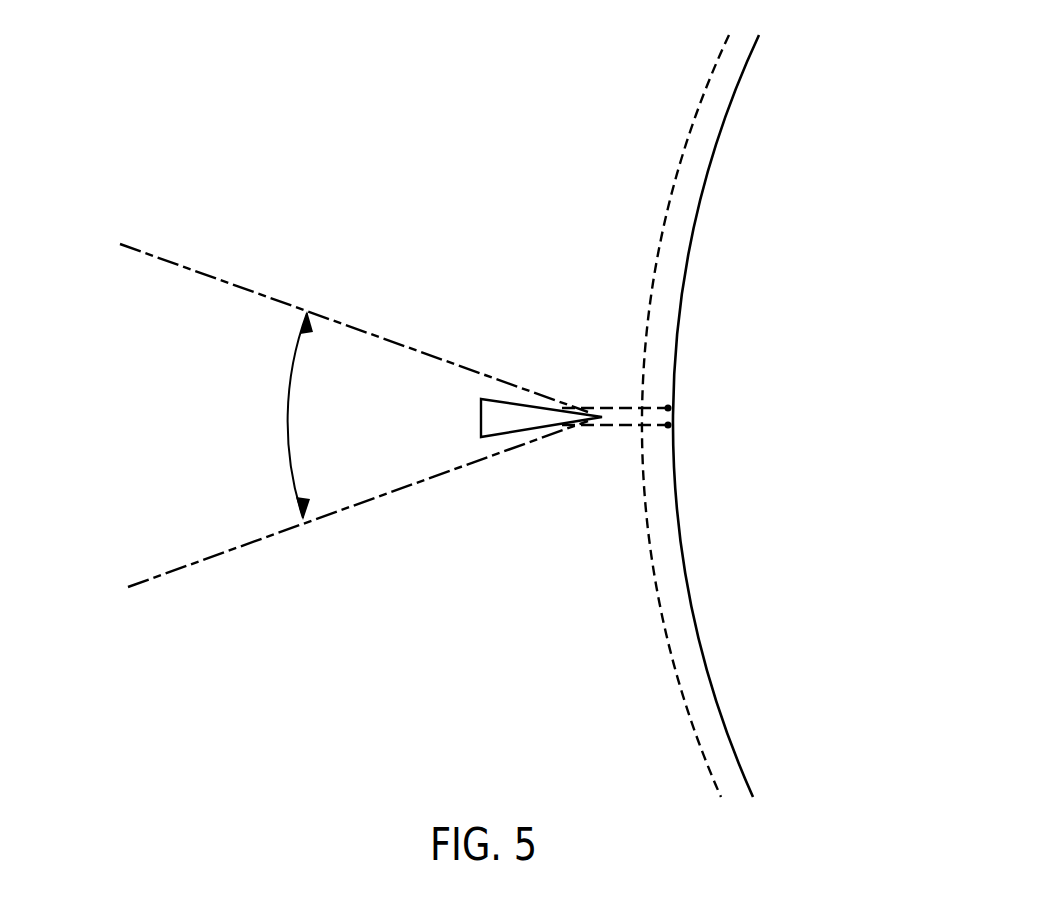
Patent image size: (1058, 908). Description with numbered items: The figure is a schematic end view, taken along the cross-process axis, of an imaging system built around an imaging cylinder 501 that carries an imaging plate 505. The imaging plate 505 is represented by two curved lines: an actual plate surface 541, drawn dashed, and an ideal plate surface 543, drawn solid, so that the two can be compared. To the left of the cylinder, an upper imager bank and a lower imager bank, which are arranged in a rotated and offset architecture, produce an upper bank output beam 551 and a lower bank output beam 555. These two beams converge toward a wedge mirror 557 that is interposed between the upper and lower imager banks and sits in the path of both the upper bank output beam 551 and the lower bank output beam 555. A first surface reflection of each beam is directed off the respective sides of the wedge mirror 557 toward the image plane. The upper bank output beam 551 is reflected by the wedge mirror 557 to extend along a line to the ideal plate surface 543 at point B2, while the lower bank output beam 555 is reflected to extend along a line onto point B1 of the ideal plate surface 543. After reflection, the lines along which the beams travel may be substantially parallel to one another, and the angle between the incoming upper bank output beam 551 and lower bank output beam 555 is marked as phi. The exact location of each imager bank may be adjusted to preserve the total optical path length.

The imaging cylinder 501 is at (766, 309).
The imaging plate 505 is at (756, 95).
The actual plate surface 541 is at (669, 180).
The ideal plate surface 543 is at (689, 583).
The upper bank output beam 551 is at (289, 302).
The lower bank output beam 555 is at (256, 543).
The wedge mirror 557 is at (481, 419).
The point B1 is at (668, 425).
The point B2 is at (668, 408).
The beam divergence angle φ phi is at (290, 420).